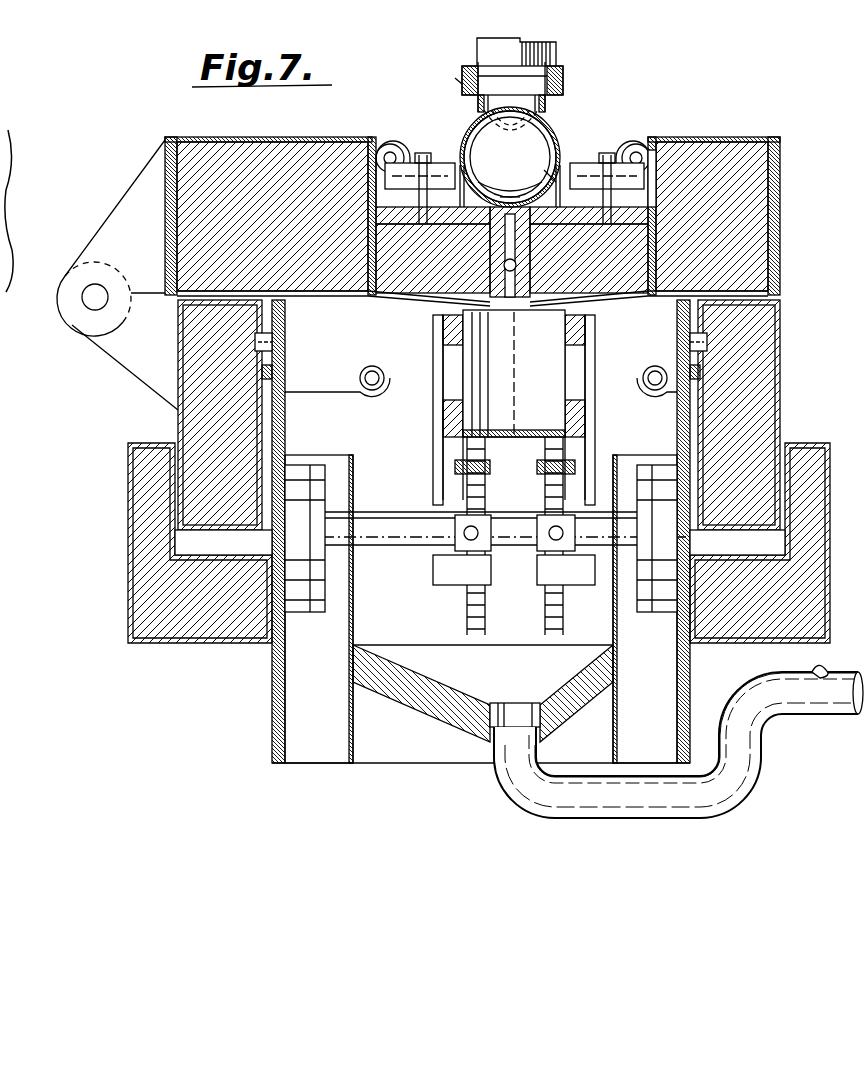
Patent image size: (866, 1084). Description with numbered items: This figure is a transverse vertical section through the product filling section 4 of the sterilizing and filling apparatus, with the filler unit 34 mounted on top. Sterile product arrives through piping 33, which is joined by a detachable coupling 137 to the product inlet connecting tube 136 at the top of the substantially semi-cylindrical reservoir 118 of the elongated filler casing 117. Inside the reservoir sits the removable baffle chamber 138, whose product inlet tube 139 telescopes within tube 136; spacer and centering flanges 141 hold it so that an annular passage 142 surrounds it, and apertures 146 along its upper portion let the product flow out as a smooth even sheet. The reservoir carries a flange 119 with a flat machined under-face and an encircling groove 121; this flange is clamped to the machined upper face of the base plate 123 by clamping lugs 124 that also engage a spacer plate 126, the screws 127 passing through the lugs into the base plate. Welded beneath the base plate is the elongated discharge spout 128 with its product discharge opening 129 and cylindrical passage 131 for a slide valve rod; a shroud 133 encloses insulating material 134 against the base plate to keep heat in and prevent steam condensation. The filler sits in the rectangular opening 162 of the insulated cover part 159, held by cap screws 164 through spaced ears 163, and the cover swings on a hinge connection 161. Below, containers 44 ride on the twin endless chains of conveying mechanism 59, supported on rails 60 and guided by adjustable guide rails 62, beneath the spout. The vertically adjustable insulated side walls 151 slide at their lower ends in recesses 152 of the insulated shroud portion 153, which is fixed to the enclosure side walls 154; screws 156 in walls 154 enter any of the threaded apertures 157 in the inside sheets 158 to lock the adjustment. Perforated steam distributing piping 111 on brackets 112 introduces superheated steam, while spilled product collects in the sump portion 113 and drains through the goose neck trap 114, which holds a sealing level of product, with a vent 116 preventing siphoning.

The product filling section 4 is at (222, 124).
The piping 33 is at (480, 48).
The filler unit 34 is at (454, 76).
The containers 44 is at (542, 380).
The conveying mechanism 59 is at (542, 456).
The rails 60 is at (540, 466).
The guide rails 62 is at (443, 334).
The perforated steam distributing piping 111 is at (372, 366).
The brackets 112 is at (332, 392).
The sump portion 113 is at (448, 718).
The goose neck trap 114 is at (762, 749).
The vent 116 is at (818, 668).
The filler casing 117 is at (562, 165).
The reservoir 118 is at (555, 142).
The flange 119 is at (541, 169).
The groove 121 is at (546, 172).
The base plate 123 is at (380, 222).
The clamping lugs 124 is at (432, 163).
The spacer plate 126 is at (392, 205).
The screws 127 is at (432, 163).
The discharge spout 128 is at (548, 300).
The product discharge opening 129 is at (500, 290).
The cylindrical passage 131 is at (452, 290).
The shroud 133 is at (405, 292).
The insulating material 134 is at (612, 268).
The product inlet connecting tube 136 is at (553, 102).
The detachable coupling 137 is at (560, 74).
The baffle chamber 138 is at (498, 155).
The product inlet tube 139 is at (548, 112).
The spacer and centering flanges 141 is at (478, 176).
The annular passage 142 is at (462, 150).
The apertures 146 is at (558, 165).
The insulated side walls 151 is at (178, 396).
The recesses 152 is at (176, 544).
The insulated shroud portion 153 is at (133, 578).
The side walls 154 is at (286, 433).
The screws 156 is at (273, 341).
The screw threaded apertures 157 is at (272, 372).
The inside sheets 158 is at (300, 456).
The insulated cover part 159 is at (165, 163).
The hinge connection 161 is at (84, 300).
The opening 162 is at (655, 170).
The ears 163 is at (396, 143).
The cap screws 164 is at (392, 144).